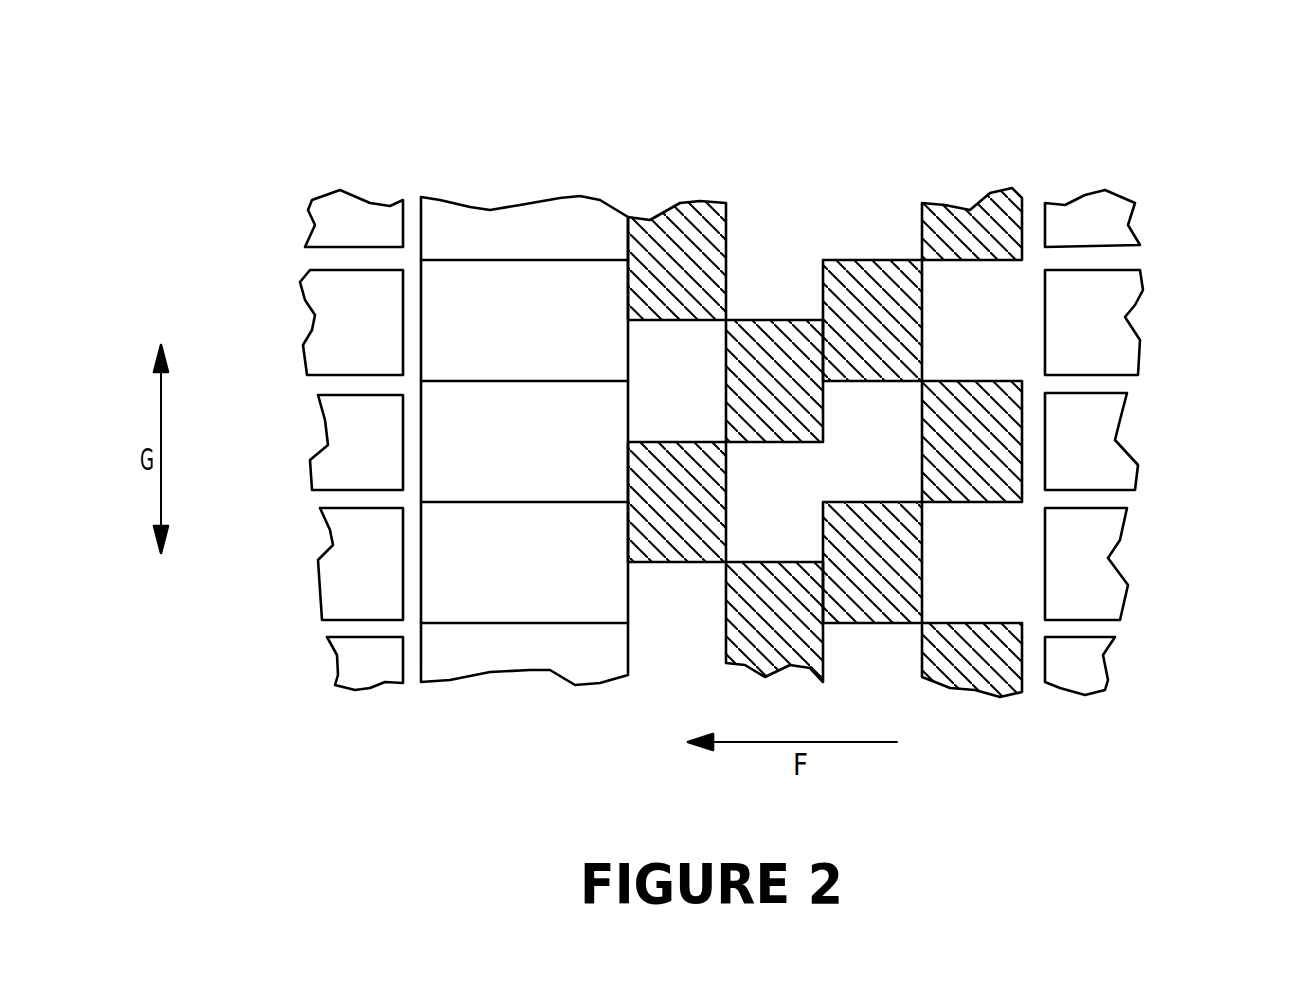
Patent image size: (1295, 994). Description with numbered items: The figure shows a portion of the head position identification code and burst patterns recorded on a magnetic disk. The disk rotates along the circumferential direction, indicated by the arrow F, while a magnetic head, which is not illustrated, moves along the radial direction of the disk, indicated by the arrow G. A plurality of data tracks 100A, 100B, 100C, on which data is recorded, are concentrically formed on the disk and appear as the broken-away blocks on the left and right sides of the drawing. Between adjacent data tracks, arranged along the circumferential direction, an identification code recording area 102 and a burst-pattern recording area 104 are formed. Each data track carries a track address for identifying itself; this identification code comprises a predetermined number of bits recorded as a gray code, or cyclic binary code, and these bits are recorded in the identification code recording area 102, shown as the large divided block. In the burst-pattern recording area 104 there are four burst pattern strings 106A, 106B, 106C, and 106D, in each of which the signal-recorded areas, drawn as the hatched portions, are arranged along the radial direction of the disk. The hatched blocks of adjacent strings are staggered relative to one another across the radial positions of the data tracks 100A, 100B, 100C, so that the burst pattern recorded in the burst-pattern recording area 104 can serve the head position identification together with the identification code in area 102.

The identification code recording area 102 is at (613, 107).
The burst-pattern recording area 104 is at (1028, 107).
The burst pattern string 106A is at (722, 177).
The burst pattern string 106B is at (818, 177).
The burst pattern string 106C is at (915, 177).
The burst pattern string 106D is at (1022, 177).
The data track 100A is at (330, 322).
The data track 100B is at (323, 443).
The data track 100C is at (333, 555).